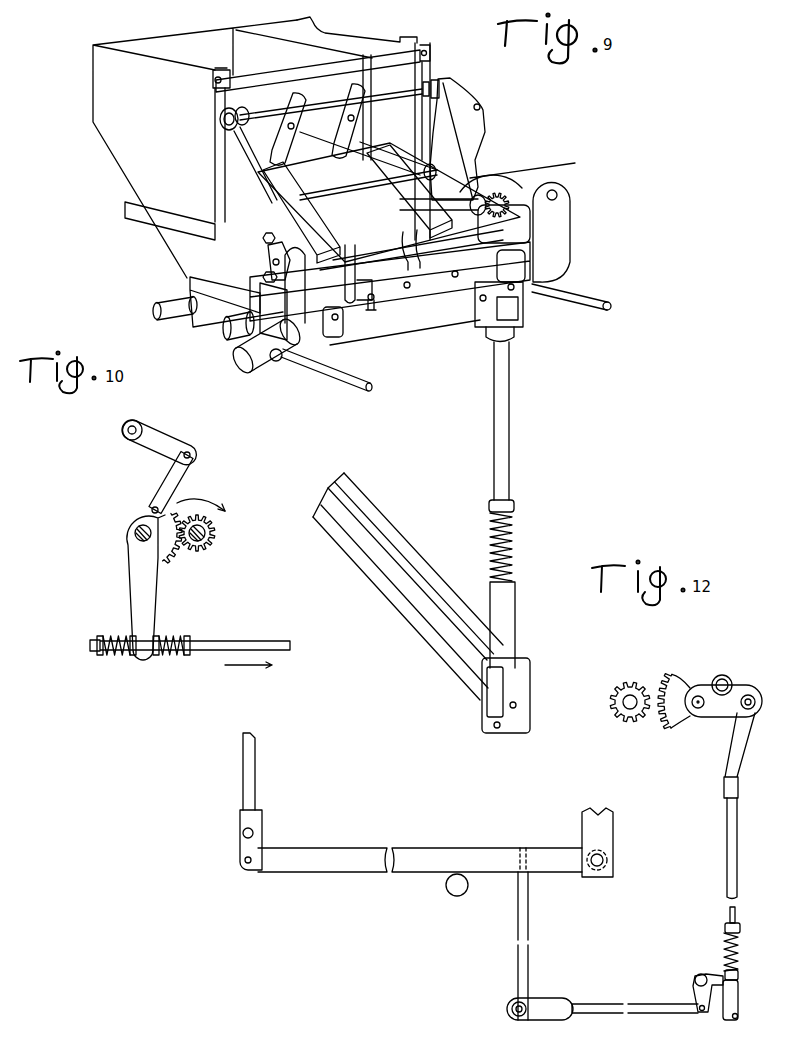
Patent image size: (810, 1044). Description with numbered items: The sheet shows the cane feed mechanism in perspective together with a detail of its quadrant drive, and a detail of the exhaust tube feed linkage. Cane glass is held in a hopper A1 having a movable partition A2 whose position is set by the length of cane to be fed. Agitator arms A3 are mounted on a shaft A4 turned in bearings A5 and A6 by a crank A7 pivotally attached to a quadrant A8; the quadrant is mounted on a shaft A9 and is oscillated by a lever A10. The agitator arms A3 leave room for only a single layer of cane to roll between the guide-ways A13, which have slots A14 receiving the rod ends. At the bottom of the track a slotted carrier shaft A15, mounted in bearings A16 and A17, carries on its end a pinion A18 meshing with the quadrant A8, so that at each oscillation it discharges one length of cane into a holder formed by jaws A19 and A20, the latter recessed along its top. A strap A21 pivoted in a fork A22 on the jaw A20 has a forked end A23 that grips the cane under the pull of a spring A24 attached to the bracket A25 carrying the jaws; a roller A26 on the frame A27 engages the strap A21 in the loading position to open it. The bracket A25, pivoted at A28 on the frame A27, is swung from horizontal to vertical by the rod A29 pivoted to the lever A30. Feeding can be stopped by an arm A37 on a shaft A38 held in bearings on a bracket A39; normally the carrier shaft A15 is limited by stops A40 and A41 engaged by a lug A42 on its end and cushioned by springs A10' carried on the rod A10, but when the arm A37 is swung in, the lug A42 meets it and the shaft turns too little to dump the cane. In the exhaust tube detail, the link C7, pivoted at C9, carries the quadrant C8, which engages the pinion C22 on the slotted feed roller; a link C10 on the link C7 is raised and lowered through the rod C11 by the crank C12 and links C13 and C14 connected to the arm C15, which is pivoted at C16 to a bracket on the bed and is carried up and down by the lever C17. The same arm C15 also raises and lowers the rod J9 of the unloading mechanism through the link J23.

In FIG. 9, the hopper A1 is at (95, 78).
In FIG. 9, the movable partition A2 is at (240, 42).
In FIG. 9, the agitator arms A3 is at (280, 160).
In FIG. 9, the shaft A4 is at (320, 104).
In FIG. 10, the shaft A4 is at (122, 431).
In FIG. 9, the bearing A5 is at (434, 78).
In FIG. 9, the bearing A6 is at (237, 110).
In FIG. 9, the crank A7 is at (462, 92).
In FIG. 10, the crank A7 is at (167, 436).
In FIG. 9, the quadrant A8 is at (487, 175).
In FIG. 10, the quadrant A8 is at (182, 500).
In FIG. 10, the shaft A9 is at (136, 533).
In FIG. 9, the lever A10 is at (573, 292).
In FIG. 10, the lever A10 is at (190, 640).
In FIG. 10, the springs A10' is at (143, 625).
In FIG. 9, the guide-ways A13 is at (285, 198).
In FIG. 9, the slots A14 is at (380, 188).
In FIG. 9, the carrier shaft A15 is at (385, 232).
In FIG. 10, the carrier shaft A15 is at (213, 528).
In FIG. 9, the bearing A16 is at (295, 318).
In FIG. 9, the bearing A17 is at (492, 214).
In FIG. 9, the pinion A18 is at (505, 192).
In FIG. 10, the pinion A18 is at (216, 545).
In FIG. 9, the jaw A19 is at (430, 238).
In FIG. 9, the jaw A20 is at (338, 236).
In FIG. 9, the strap A21 is at (356, 292).
In FIG. 9, the fork A22 is at (345, 277).
In FIG. 9, the forked end A23 is at (405, 281).
In FIG. 9, the spring A24 is at (376, 310).
In FIG. 9, the bracket A25 is at (452, 295).
In FIG. 9, the roller A26 is at (356, 318).
In FIG. 9, the frame A27 is at (383, 340).
In FIG. 9, the pivot A28 is at (557, 195).
In FIG. 9, the rod A29 is at (510, 420).
In FIG. 9, the lever A30 is at (412, 578).
In FIG. 9, the arm A37 is at (262, 290).
In FIG. 9, the shaft A38 is at (350, 386).
In FIG. 9, the bracket A39 is at (270, 360).
In FIG. 9, the stop A40 is at (265, 232).
In FIG. 9, the stop A41 is at (263, 276).
In FIG. 9, the lug A42 is at (268, 250).
In FIG. 12, the link C7 is at (738, 680).
In FIG. 12, the quadrant C8 is at (662, 672).
In FIG. 12, the pivot C9 is at (698, 709).
In FIG. 12, the link C10 is at (740, 772).
In FIG. 12, the rod C11 is at (740, 890).
In FIG. 12, the crank C12 is at (696, 988).
In FIG. 12, the link C13 is at (608, 1003).
In FIG. 12, the link C14 is at (530, 966).
In FIG. 12, the arm C15 is at (354, 846).
In FIG. 12, the pivot C16 is at (605, 860).
In FIG. 12, the lever C17 is at (455, 896).
In FIG. 12, the pinion C22 is at (615, 686).
In FIG. 12, the rod J9 is at (255, 785).
In FIG. 12, the link J23 is at (258, 840).